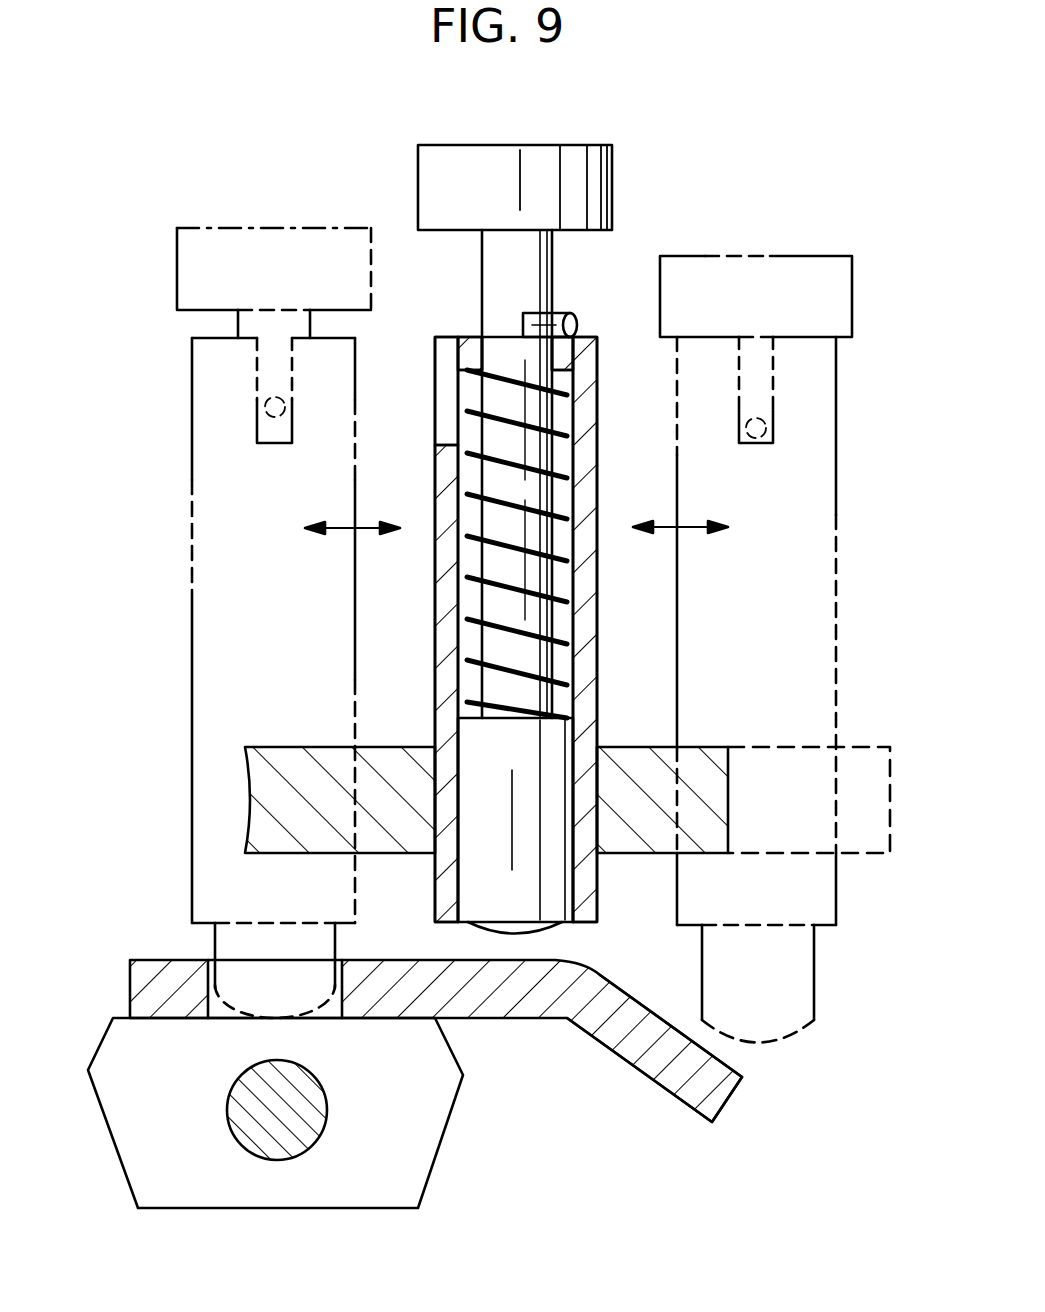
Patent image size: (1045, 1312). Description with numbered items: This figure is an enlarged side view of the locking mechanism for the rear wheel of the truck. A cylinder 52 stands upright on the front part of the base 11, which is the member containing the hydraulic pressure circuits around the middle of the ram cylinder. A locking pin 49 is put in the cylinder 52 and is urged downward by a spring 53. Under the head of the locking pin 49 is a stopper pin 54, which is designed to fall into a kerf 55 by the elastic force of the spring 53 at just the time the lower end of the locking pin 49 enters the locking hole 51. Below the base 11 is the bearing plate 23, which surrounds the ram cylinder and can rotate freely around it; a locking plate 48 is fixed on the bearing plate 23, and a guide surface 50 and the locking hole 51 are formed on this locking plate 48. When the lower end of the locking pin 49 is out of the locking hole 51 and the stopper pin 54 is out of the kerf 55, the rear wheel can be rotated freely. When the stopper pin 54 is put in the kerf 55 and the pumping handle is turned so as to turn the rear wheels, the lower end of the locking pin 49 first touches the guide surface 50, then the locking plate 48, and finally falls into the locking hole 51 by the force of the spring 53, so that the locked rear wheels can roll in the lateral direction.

The locking pin 49 is at (445, 175).
The stopper pin 54 is at (557, 315).
The kerf 55 is at (447, 400).
The spring 53 is at (560, 515).
The cylinder 52 is at (588, 645).
The base 11 is at (700, 801).
The locking hole 51 is at (262, 1000).
The guide surface 50 is at (670, 1016).
The locking plate 48 is at (590, 1005).
The bearing plate 23 is at (412, 1148).